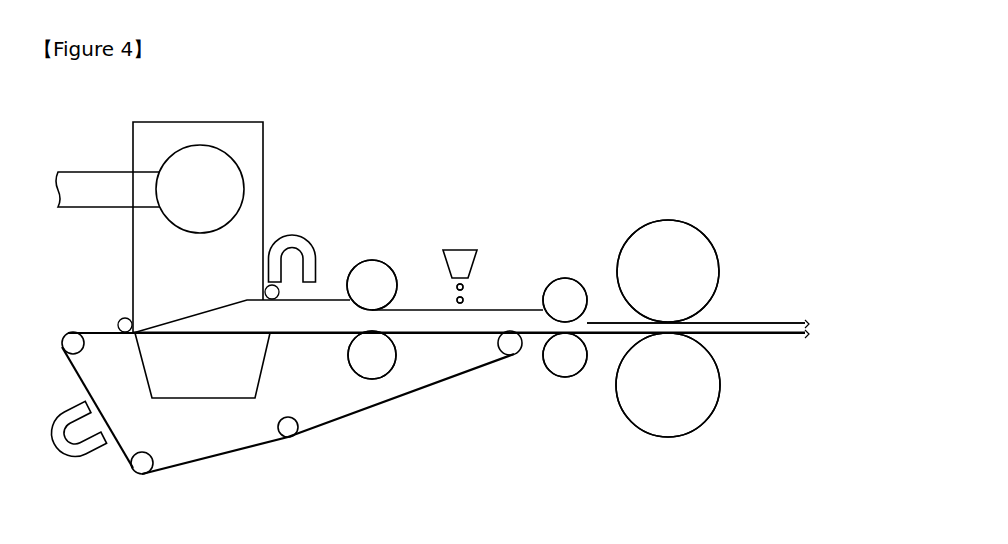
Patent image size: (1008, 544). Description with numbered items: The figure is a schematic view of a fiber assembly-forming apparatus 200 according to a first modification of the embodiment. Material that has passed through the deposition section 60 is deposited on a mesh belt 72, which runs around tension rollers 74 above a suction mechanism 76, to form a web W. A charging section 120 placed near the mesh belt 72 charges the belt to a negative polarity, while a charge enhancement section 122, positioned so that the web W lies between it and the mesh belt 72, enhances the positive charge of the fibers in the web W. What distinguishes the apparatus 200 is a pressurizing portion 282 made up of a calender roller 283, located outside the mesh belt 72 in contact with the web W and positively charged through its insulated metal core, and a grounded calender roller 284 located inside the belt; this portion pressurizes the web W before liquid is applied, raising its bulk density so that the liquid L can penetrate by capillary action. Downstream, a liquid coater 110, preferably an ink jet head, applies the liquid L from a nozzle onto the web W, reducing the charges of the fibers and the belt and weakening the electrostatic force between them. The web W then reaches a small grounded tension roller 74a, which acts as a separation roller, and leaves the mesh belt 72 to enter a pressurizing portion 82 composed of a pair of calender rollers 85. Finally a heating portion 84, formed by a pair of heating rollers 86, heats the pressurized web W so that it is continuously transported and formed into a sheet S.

The fiber assembly-forming apparatus 200 is at (752, 90).
The deposition section 60 is at (287, 90).
The mesh belt 72 is at (101, 331).
The tension rollers 74 is at (142, 470).
The tension roller 74a is at (507, 350).
The suction mechanism 76 is at (205, 380).
The charging section 120 is at (73, 452).
The charge enhancement section 122 is at (291, 237).
The web W is at (332, 317).
The pressurizing portion 282 is at (393, 238).
The calender roller 283 is at (371, 283).
The calender roller 284 is at (372, 360).
The liquid coater 110 is at (460, 262).
The liquid L is at (463, 287).
The pressurizing portion 82 is at (573, 262).
The calender rollers 85 is at (552, 298).
The heating portion 84 is at (724, 204).
The heating rollers 86 is at (693, 248).
The sheet S is at (770, 327).